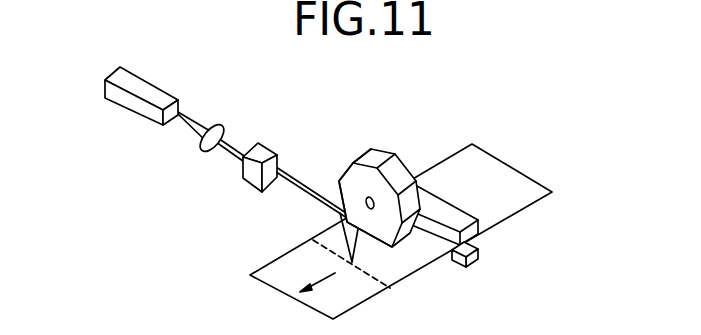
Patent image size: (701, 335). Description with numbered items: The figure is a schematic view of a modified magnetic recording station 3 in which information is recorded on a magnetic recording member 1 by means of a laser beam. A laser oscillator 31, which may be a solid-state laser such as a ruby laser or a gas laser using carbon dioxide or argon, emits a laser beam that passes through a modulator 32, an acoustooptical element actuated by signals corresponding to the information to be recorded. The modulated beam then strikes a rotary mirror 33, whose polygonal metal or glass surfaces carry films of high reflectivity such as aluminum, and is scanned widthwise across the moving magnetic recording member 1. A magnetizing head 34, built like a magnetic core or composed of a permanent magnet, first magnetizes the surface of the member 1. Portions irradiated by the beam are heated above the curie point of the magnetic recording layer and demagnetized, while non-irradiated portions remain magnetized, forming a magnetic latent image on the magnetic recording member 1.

The magnetic recording member 1 is at (405, 278).
The magnetic recording station 3 is at (367, 185).
The laser oscillator 31 is at (122, 106).
The modulator 32 is at (243, 177).
The rotary mirror 33 is at (405, 163).
The magnetizing head 34 is at (455, 203).